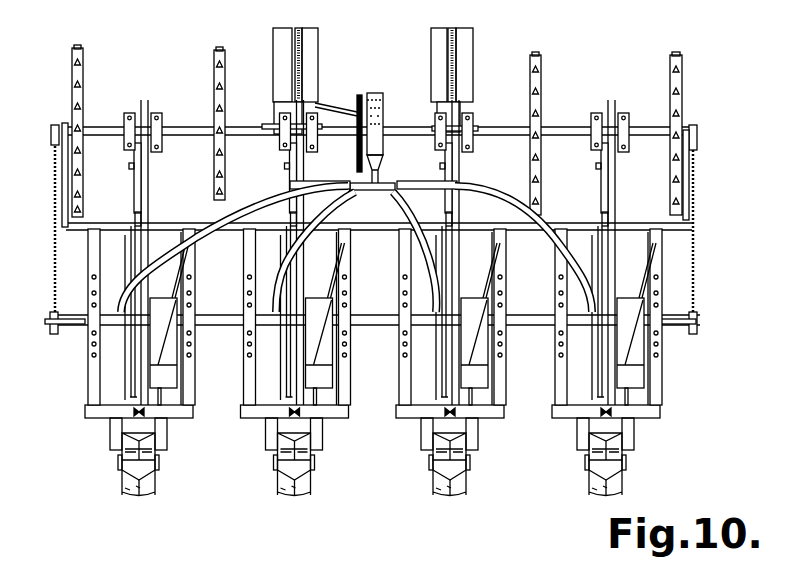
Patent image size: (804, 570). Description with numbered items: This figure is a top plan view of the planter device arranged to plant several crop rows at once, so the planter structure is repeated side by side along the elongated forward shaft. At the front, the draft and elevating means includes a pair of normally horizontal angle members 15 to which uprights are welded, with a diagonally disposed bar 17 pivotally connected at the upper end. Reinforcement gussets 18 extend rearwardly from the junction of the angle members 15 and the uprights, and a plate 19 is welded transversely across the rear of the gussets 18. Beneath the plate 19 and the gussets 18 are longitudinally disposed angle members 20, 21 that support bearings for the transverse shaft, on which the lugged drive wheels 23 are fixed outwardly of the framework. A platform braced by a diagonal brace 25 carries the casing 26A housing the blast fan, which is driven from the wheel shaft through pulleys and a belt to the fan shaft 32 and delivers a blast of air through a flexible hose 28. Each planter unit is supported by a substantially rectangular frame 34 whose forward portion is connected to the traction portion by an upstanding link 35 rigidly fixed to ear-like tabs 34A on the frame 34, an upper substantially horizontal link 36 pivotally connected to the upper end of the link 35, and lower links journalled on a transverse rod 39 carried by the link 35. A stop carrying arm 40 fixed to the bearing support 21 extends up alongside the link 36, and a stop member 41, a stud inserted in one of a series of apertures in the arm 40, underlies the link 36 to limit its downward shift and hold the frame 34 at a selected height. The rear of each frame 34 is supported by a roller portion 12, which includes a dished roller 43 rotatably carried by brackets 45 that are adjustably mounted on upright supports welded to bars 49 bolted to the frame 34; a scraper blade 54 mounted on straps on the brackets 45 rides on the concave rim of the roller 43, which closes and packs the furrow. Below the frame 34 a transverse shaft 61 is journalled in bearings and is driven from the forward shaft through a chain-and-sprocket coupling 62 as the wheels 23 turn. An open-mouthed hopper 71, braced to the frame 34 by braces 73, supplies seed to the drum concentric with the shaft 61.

The rear roller portion 12 is at (188, 466).
The angle members 15 is at (318, 44).
The diagonally disposed bar 17 is at (298, 28).
The reinforcement gussets 18 is at (278, 110).
The plate 19 is at (275, 127).
The angle member 20 is at (155, 113).
The angle member 21 is at (124, 144).
The drive wheels 23 is at (83, 71).
The diagonal brace 25 is at (318, 106).
The casing 26A is at (372, 96).
The flexible hose 28 is at (194, 234).
The fan shaft 32 is at (248, 132).
The frame 34 is at (88, 252).
The ear-like tabs 34A is at (137, 226).
The upstanding link 35 is at (135, 214).
The upper link 36 is at (148, 198).
The transverse rod 39 is at (183, 227).
The stop carrying arm 40 is at (134, 186).
The stop member 41 is at (129, 166).
The roller 43 is at (122, 488).
The brackets 45 is at (118, 467).
The bars 49 is at (110, 435).
The scraper blade 54 is at (145, 470).
The transverse shaft 61 is at (523, 320).
The chain-and-sprocket coupling 62 is at (54, 298).
The hopper 71 is at (168, 313).
The braces 73 is at (180, 272).